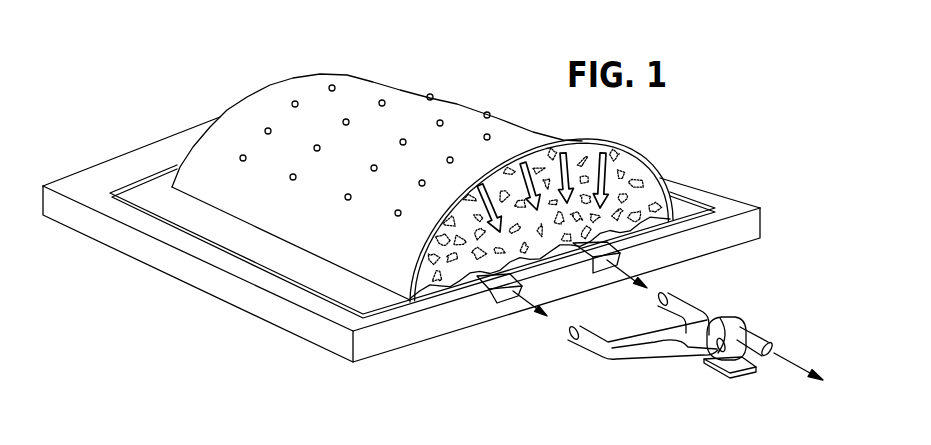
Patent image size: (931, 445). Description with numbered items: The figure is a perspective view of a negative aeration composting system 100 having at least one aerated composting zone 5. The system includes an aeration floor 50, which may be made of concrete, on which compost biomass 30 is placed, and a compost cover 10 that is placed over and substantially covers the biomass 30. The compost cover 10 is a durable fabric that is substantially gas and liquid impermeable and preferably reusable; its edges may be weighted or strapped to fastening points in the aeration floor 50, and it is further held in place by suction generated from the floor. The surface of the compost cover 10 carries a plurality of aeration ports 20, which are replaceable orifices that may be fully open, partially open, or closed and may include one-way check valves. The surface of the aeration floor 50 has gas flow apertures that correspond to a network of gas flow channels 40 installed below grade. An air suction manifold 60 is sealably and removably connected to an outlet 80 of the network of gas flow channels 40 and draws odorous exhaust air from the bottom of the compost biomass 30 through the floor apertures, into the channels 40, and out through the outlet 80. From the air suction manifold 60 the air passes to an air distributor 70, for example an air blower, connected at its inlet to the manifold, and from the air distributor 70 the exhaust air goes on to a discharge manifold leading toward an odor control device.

The negative aeration composting system 100 is at (227, 92).
The aeration floor 50 is at (110, 203).
The aerated composting zone 5 is at (343, 317).
The compost cover 10 is at (450, 105).
The aeration ports 20 is at (393, 93).
The compost biomass 30 is at (635, 182).
The gas flow channels 40 is at (503, 307).
The outlet 80 is at (620, 257).
The air suction manifold 60 is at (593, 337).
The air distributor 70 is at (713, 373).